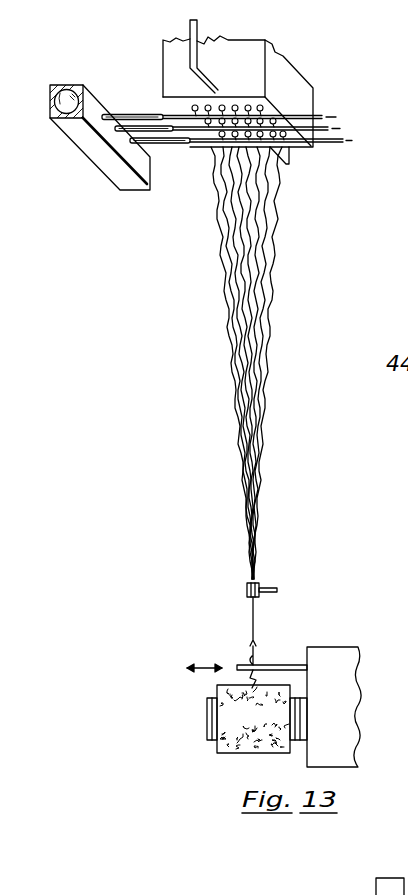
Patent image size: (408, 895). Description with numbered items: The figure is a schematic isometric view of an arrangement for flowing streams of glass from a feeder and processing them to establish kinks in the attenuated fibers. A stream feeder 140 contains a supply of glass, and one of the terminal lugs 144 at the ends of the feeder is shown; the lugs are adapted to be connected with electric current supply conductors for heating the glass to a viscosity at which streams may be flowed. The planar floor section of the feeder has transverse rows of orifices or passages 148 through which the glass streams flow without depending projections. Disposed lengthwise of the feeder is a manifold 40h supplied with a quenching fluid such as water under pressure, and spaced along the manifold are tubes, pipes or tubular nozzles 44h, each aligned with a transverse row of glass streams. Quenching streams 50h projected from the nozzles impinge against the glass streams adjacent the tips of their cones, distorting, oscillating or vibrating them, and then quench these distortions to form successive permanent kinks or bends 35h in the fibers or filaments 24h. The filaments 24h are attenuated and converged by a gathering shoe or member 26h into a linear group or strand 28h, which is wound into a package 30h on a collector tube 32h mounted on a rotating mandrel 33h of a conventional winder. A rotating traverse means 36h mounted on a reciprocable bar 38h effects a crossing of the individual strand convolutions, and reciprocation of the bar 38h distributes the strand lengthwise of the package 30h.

The fibers or filaments 24h is at (278, 296).
The gathering shoe or member 26h is at (262, 582).
The linear group or strand 28h is at (257, 617).
The package 30h is at (237, 754).
The collector tube 32h is at (212, 746).
The rotating mandrel 33h is at (207, 714).
The kinks or bends 35h is at (283, 209).
The rotating traverse means 36h is at (247, 663).
The reciprocable bar 38h is at (310, 624).
The manifold 40h is at (76, 84).
The tubes, pipes or tubular nozzles 44h is at (122, 123).
The quenching streams 50h is at (182, 121).
The stream feeder 140 is at (280, 48).
The terminal lug 144 is at (214, 38).
The orifices or passages 148 is at (217, 110).